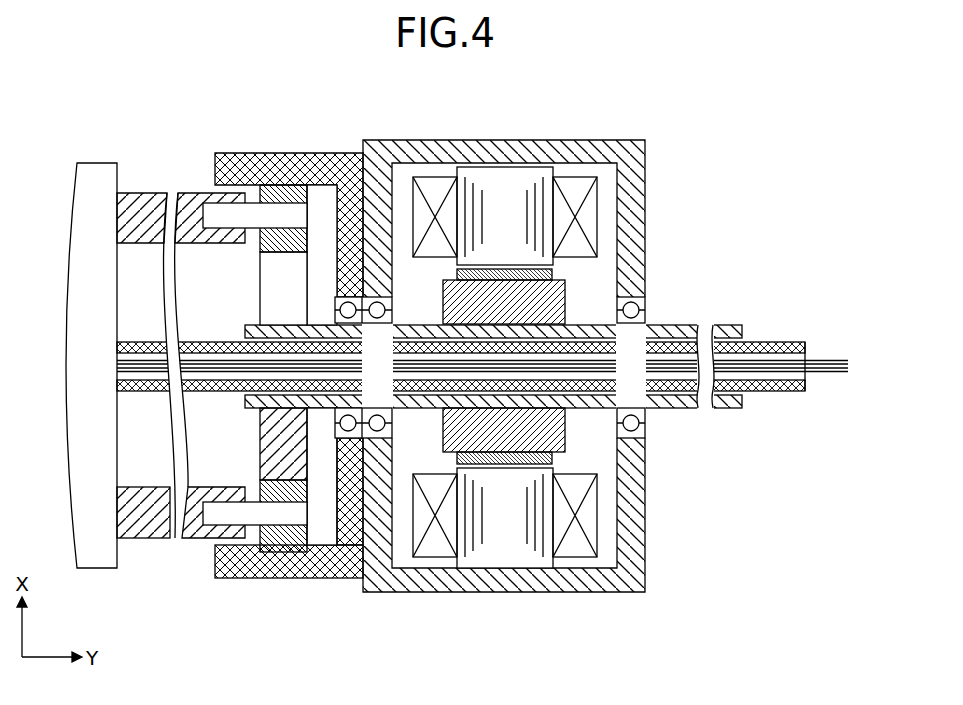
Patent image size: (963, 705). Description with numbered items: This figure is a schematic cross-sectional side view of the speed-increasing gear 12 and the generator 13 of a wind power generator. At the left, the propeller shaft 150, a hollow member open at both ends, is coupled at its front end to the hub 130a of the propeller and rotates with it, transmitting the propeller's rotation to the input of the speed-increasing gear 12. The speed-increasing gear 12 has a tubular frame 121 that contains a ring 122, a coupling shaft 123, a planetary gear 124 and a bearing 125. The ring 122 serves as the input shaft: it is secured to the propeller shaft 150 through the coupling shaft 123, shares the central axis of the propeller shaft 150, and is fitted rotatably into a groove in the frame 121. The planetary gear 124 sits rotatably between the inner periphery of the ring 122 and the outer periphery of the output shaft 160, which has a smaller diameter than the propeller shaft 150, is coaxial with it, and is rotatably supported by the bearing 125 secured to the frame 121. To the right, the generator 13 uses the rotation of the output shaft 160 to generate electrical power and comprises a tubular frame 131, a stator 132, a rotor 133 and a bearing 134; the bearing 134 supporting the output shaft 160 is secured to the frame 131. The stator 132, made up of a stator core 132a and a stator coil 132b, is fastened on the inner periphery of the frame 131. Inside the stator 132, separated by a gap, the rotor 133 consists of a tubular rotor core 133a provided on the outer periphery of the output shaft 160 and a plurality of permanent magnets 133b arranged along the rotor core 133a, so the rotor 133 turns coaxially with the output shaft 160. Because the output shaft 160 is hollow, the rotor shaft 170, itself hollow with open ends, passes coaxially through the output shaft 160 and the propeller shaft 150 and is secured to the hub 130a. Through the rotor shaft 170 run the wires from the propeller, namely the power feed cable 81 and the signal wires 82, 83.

The speed-increasing gear 12 is at (266, 348).
The generator 13 is at (554, 327).
The hub 130a is at (98, 163).
The propeller shaft 150 is at (143, 193).
The frame 121 is at (270, 153).
The ring 122 is at (315, 185).
The coupling shaft 123 is at (215, 210).
The planetary gear 124 is at (260, 443).
The bearing 125 is at (349, 440).
The frame 131 is at (647, 186).
The stator 132 is at (502, 315).
The stator core 132a is at (505, 172).
The stator coil 132b is at (532, 100).
The rotor 133 is at (608, 385).
The rotor core 133a is at (565, 432).
The permanent magnets 133b is at (552, 460).
The bearing 134 is at (647, 302).
The output shaft 160 is at (278, 322).
The rotor shaft 170 is at (763, 342).
The power feed cable 81 is at (823, 361).
The signal wire 82 is at (837, 367).
The signal wire 83 is at (827, 373).